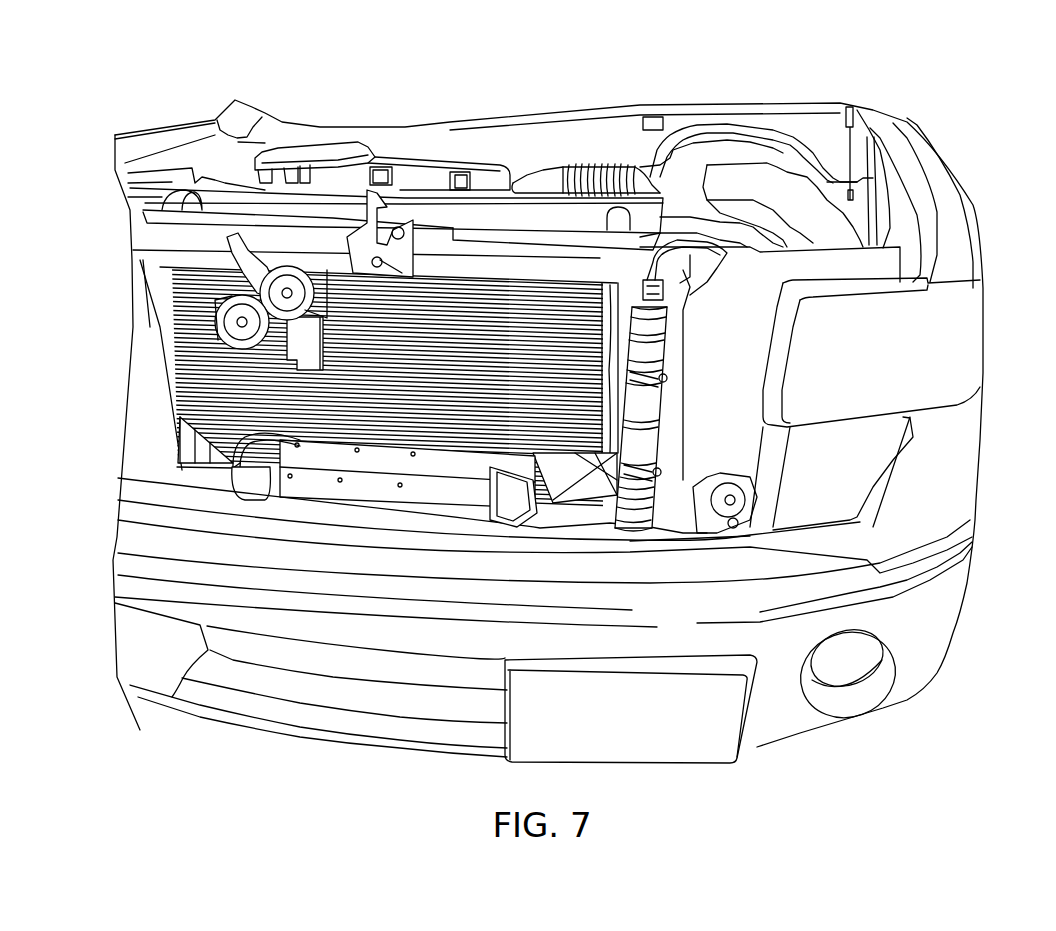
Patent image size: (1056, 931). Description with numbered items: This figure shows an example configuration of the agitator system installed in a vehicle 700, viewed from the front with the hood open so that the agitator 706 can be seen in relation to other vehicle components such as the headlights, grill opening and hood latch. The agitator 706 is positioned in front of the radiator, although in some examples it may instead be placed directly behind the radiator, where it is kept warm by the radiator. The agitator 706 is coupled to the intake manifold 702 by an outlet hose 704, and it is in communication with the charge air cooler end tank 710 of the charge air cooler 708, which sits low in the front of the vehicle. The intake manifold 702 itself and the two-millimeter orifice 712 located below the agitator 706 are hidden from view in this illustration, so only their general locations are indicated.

The vehicle 700 is at (960, 130).
The intake manifold 702 is at (534, 165).
The outlet hose 704 is at (665, 258).
The agitator 706 is at (665, 400).
The charge air cooler 708 is at (375, 447).
The charge air cooler end tank 710 is at (520, 472).
The 2 mm orifice 712 is at (627, 548).